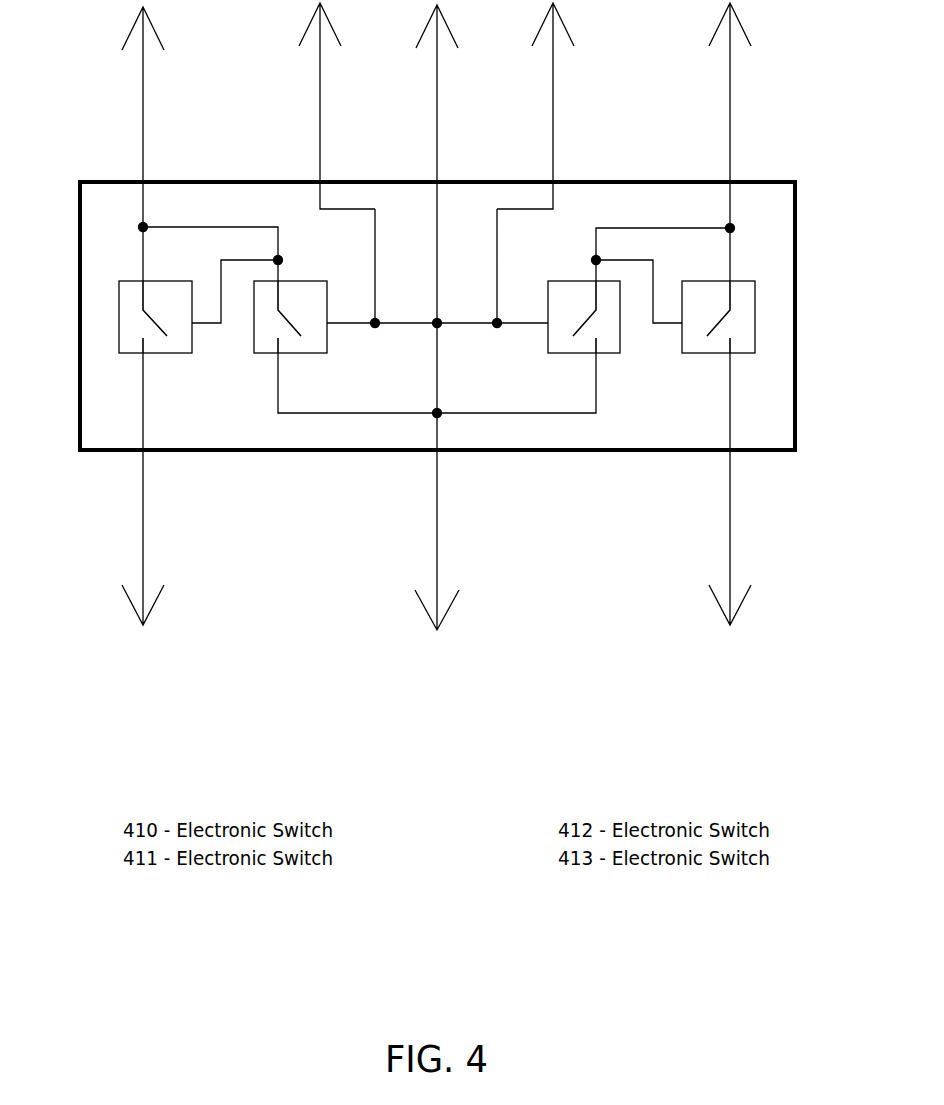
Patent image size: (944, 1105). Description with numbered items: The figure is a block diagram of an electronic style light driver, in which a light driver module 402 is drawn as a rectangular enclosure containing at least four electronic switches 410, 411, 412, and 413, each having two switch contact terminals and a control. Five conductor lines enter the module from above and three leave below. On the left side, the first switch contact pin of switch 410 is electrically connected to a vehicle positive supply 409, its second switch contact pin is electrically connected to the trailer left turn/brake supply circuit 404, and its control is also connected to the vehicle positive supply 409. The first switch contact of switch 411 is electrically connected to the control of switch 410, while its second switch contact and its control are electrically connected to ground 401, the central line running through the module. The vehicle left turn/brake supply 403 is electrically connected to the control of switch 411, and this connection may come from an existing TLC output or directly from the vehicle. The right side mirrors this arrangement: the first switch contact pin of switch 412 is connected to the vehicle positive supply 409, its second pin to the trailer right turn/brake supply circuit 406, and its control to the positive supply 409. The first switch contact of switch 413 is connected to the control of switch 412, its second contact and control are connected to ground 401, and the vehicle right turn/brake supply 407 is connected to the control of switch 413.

The ground 401 is at (437, 120).
The light driver module 402 is at (795, 313).
The vehicle left turn/brake supply 403 is at (320, 87).
The trailer left turn/brake supply circuit 404 is at (144, 522).
The trailer right turn/brake supply circuit 406 is at (730, 515).
The vehicle right turn/brake supply 407 is at (553, 117).
The vehicle positive supply 409 is at (144, 97).
The electronic switch 410 is at (170, 353).
The electronic switch 411 is at (307, 353).
The electronic switch 412 is at (703, 353).
The electronic switch 413 is at (568, 353).